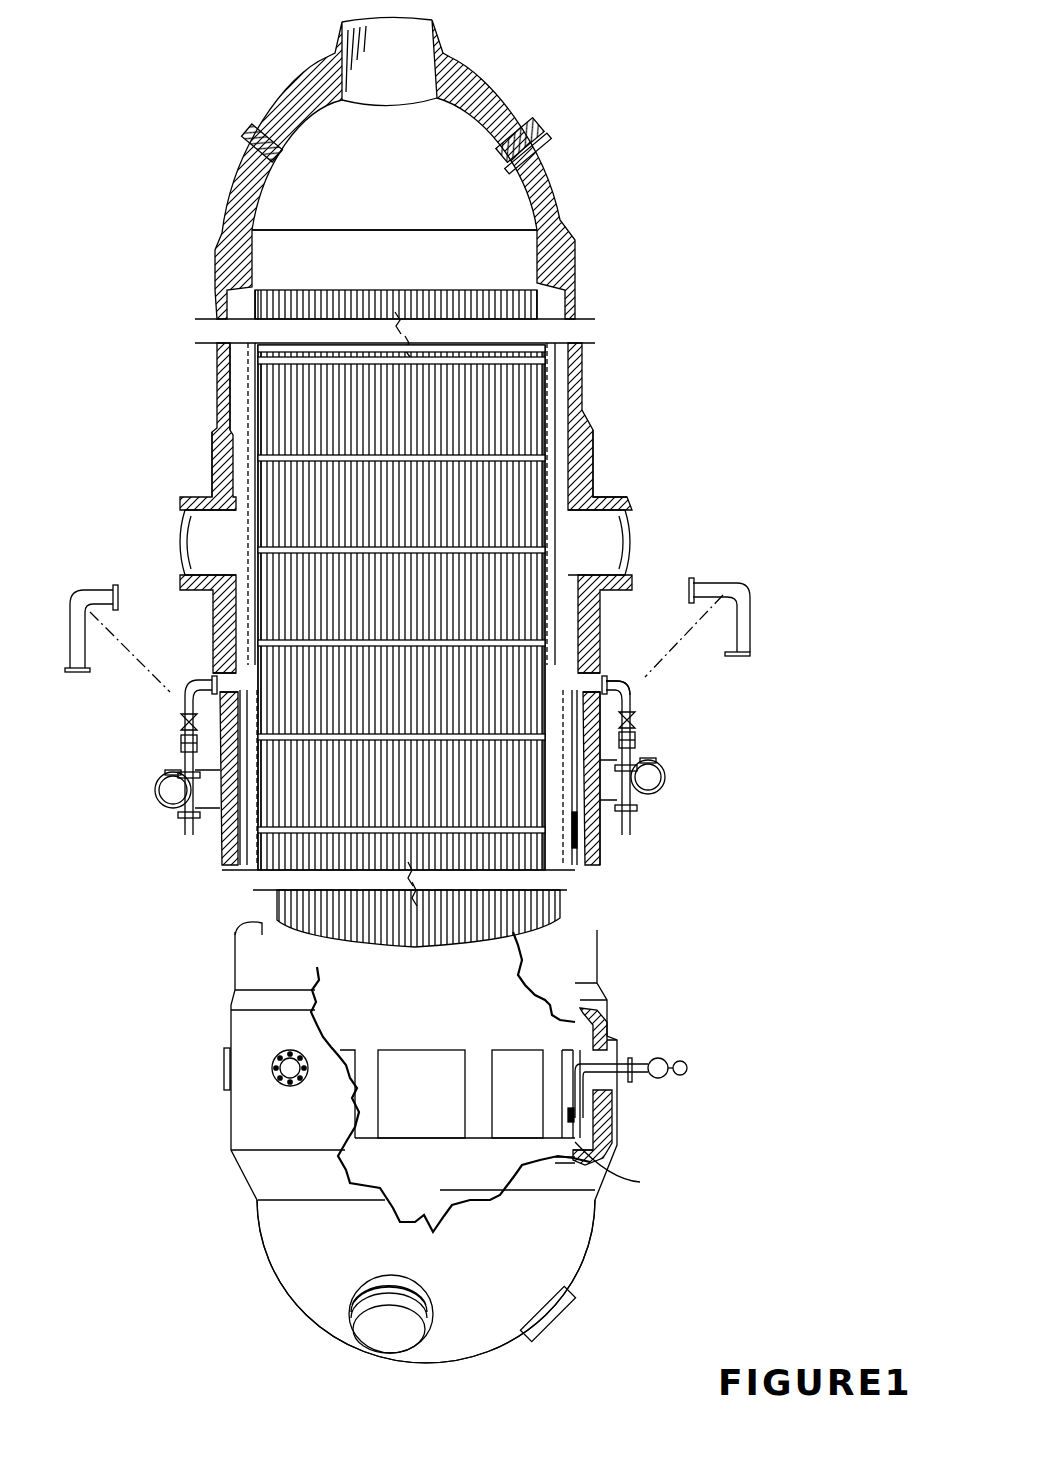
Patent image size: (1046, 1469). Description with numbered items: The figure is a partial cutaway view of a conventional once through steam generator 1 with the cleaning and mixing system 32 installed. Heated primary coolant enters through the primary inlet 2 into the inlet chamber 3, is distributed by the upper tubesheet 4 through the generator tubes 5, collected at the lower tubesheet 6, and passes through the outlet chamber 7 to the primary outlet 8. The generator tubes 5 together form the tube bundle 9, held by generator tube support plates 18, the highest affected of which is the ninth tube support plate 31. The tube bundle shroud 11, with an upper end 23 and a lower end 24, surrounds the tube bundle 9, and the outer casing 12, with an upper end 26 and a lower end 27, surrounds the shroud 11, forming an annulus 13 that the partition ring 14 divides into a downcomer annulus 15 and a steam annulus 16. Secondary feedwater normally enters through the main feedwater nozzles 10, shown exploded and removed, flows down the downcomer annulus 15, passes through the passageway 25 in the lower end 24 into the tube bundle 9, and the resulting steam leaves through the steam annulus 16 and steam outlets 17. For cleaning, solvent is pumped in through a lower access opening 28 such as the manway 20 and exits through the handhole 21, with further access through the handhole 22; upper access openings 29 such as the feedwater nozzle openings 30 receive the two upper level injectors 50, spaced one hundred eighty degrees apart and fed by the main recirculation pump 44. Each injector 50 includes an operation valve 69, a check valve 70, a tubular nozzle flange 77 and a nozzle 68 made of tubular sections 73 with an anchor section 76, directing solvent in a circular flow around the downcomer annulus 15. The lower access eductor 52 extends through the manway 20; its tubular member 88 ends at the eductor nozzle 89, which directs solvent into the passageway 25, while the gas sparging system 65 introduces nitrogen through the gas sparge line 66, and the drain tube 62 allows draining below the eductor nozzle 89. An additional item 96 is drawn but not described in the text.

The once through steam generator 1 is at (682, 185).
The primary inlet 2 is at (378, 80).
The inlet chamber 3 is at (382, 188).
The upper tubesheet 4 is at (515, 262).
The generator tubes 5 is at (523, 392).
The lower tubesheet 6 is at (513, 1157).
The outlet chamber 7 is at (408, 1213).
The primary outlet 8 is at (376, 1336).
The tube bundle 9 is at (402, 609).
The main feedwater nozzles 10 is at (98, 595).
The tube bundle shroud 11 is at (555, 468).
The outer casing 12 is at (600, 580).
The annulus 13 is at (232, 497).
The partition ring 14 is at (600, 602).
The downcomer annulus 15 is at (585, 868).
The steam annulus 16 is at (565, 500).
The steam outlets 17 is at (198, 557).
The generator tube support plates 18 is at (300, 372).
The manway 20 is at (636, 1058).
The handhole 21 is at (226, 1046).
The handhole 22 is at (290, 1048).
The upper end 23 is at (235, 436).
The lower end 24 is at (518, 998).
The passageway 25 is at (412, 1112).
The upper end 26 is at (567, 197).
The lower end 27 is at (597, 1272).
The lower access opening 28 is at (218, 1077).
The upper access openings 29 is at (209, 669).
The feedwater nozzle openings 30 is at (213, 650).
The ninth tube support plate 31 is at (440, 740).
The cleaning and mixing system 32 is at (675, 743).
The main recirculation pump 44 is at (418, 642).
The upper level injectors 50 is at (168, 737).
The lower access eductor 52 is at (655, 1090).
The drain tube 62 is at (610, 1143).
The gas sparging system 65 is at (692, 1062).
The gas sparge line 66 is at (672, 1078).
The upper level injector nozzle 68 is at (252, 822).
The operation valve 69 is at (183, 722).
The check valve 70 is at (183, 744).
The tubular sections 73 is at (250, 842).
The anchor section 76 is at (247, 866).
The tubular nozzle flange 77 is at (605, 668).
The tubular member 88 is at (640, 1055).
The eductor nozzle 89 is at (585, 1163).
The drive mechanism 96 is at (152, 796).